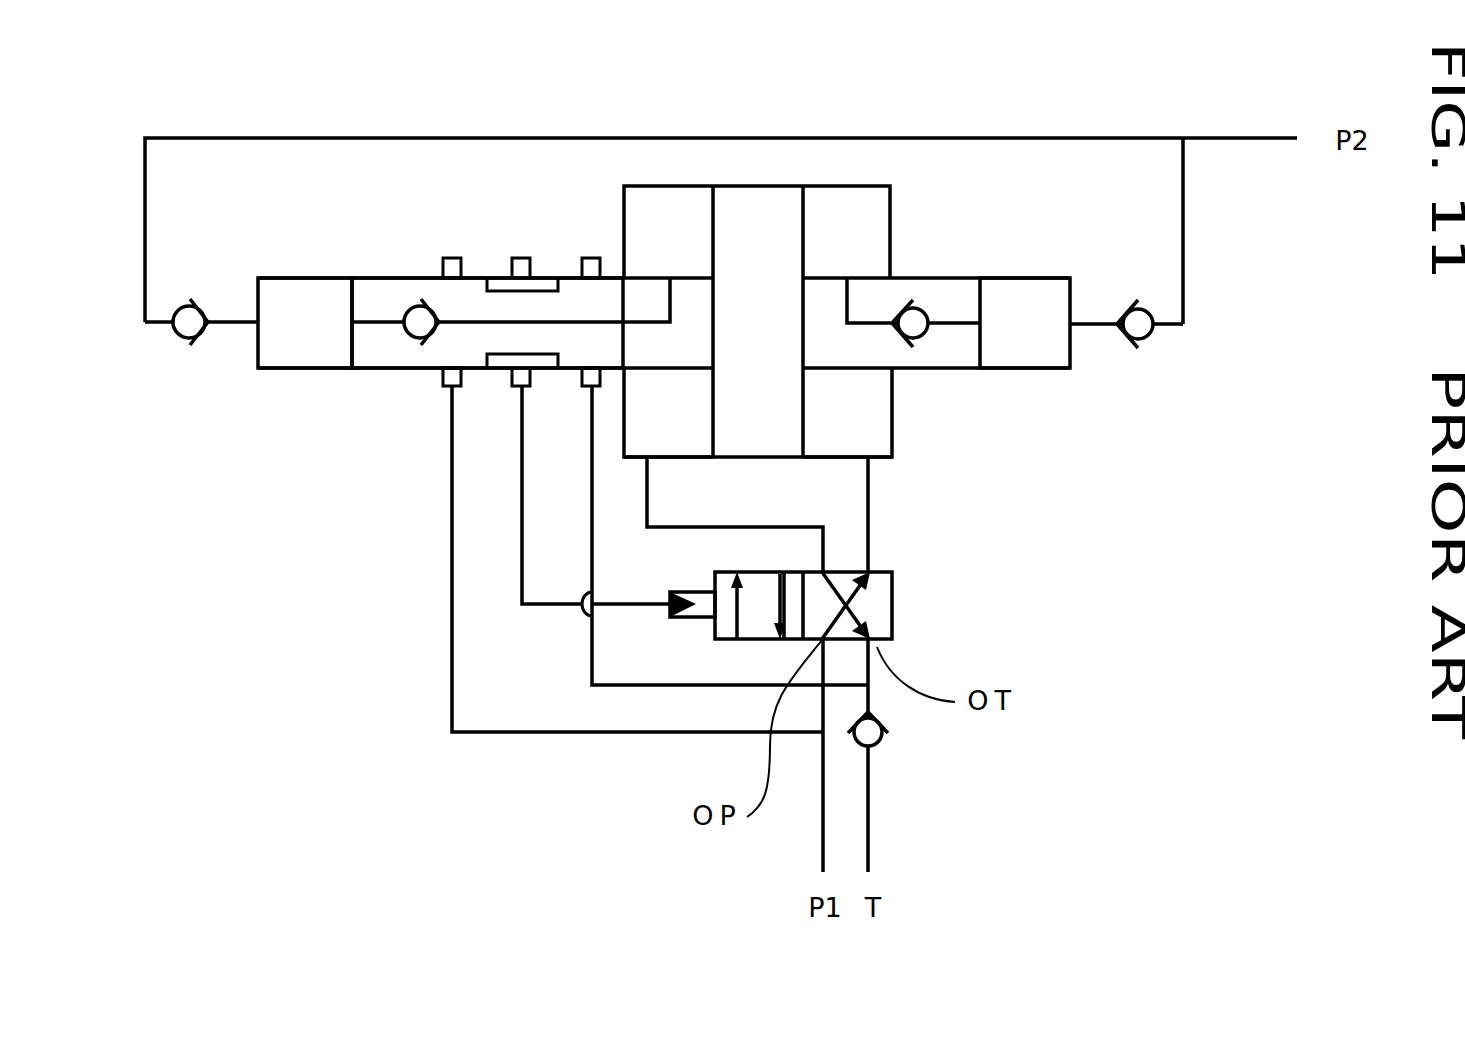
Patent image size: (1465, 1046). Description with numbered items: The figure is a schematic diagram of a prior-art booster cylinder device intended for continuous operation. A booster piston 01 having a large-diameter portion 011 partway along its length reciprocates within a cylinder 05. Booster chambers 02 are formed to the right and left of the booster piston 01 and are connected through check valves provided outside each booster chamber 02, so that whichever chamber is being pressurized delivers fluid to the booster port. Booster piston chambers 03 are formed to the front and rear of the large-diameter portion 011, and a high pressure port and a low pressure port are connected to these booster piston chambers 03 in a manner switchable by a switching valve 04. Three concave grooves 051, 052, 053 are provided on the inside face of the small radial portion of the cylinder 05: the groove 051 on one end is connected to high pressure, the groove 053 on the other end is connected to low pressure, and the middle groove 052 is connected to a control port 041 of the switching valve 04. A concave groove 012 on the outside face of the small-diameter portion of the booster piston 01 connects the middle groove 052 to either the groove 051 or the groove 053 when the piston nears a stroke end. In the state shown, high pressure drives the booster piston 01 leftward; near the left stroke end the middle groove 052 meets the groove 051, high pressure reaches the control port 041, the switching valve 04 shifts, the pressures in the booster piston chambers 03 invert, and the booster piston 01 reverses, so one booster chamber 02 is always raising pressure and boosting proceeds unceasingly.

The booster piston 01 is at (798, 279).
The large-diameter portion 011 is at (748, 247).
The concave groove 012 is at (505, 362).
The booster chamber 02 is at (317, 345).
The booster piston chamber 03 is at (675, 432).
The switching valve 04 is at (893, 593).
The control port 041 is at (693, 620).
The cylinder 05 is at (670, 186).
The groove on one end 051 is at (442, 267).
The middle groove 052 is at (510, 266).
The groove on the other end 053 is at (593, 258).